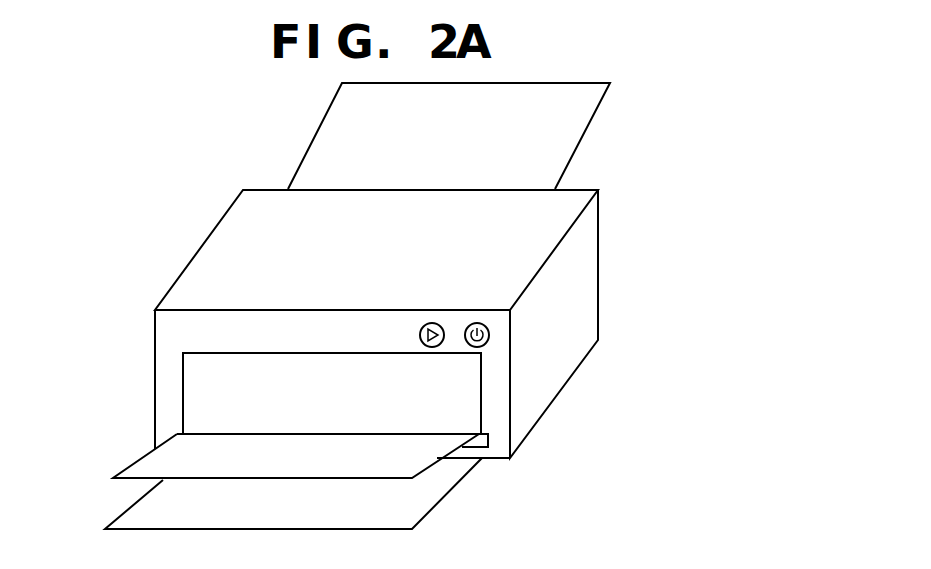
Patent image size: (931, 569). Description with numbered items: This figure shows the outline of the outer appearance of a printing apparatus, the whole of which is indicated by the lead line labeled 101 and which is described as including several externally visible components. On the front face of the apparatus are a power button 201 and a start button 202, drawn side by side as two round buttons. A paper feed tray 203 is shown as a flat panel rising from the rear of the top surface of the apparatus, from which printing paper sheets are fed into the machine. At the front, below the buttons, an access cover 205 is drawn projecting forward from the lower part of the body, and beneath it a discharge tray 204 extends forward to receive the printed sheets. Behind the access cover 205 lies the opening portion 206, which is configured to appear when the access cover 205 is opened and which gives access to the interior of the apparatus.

The printing apparatus 101 is at (118, 136).
The power button 201 is at (490, 334).
The start button 202 is at (441, 325).
The paper feed tray 203 is at (602, 98).
The discharge tray 204 is at (423, 520).
The access cover 205 is at (423, 472).
The opening portion 206 is at (470, 413).